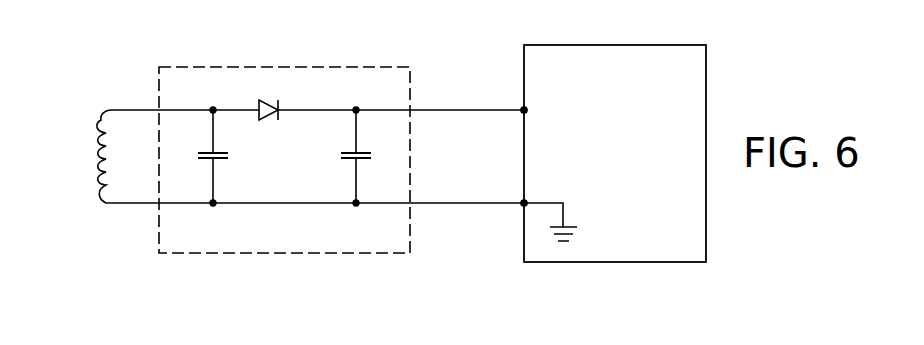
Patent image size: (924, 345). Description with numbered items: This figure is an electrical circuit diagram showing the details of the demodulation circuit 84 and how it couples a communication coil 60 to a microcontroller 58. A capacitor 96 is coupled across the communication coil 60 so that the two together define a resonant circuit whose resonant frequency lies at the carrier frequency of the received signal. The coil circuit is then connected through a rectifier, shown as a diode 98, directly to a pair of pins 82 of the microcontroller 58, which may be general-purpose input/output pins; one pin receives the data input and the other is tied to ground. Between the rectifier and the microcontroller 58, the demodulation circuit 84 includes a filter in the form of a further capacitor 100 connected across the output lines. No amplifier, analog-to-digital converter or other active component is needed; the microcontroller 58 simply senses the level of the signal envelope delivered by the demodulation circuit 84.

The microcontroller 58 is at (707, 97).
The communication coil 60 is at (108, 110).
The pins 82 is at (522, 108).
The demodulation circuit 84 is at (241, 67).
The capacitor 96 is at (205, 153).
The diode 98 is at (270, 122).
The capacitor 100 is at (350, 153).